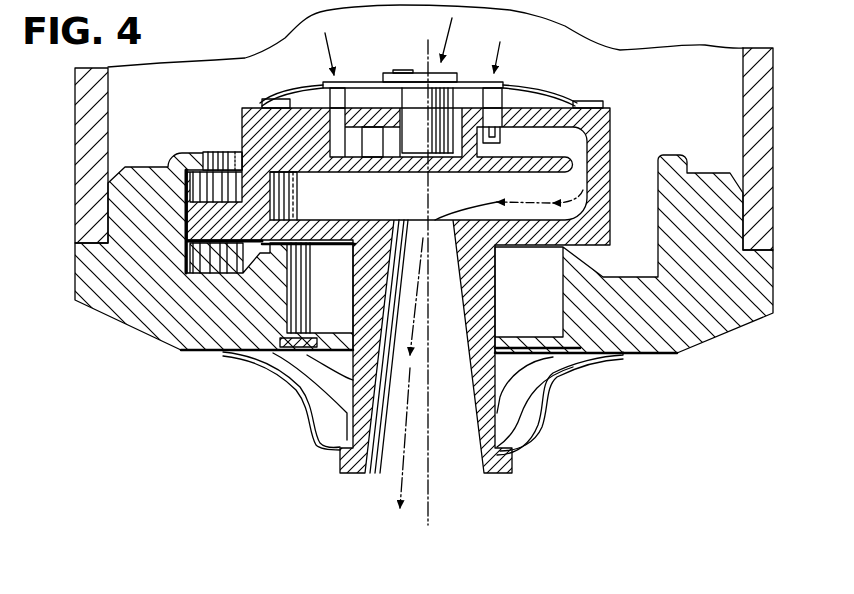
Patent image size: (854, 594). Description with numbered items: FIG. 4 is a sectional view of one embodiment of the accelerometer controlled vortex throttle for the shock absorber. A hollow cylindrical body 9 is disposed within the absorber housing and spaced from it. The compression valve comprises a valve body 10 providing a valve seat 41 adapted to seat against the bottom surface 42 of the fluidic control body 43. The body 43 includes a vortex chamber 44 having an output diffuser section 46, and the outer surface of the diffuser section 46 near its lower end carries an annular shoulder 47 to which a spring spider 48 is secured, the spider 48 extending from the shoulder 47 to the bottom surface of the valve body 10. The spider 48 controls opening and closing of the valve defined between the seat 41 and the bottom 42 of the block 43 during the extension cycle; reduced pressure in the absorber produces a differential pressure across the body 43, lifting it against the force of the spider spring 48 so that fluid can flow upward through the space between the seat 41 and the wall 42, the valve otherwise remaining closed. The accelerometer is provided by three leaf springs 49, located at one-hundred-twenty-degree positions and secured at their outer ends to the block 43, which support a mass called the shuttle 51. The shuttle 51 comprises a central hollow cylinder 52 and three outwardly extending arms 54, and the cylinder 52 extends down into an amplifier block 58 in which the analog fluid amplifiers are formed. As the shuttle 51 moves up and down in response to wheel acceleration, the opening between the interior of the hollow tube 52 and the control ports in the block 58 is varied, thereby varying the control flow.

The hollow cylindrical body 9 is at (743, 107).
The valve body 10 is at (180, 352).
The valve seat 41 is at (284, 240).
The bottom surface 42 is at (320, 250).
The fluidic control body 43 is at (247, 107).
The vortex chamber 44 is at (384, 209).
The output diffuser section 46 is at (460, 372).
The annular shoulder 47 is at (342, 449).
The spring spider 48 is at (547, 417).
The leaf springs 49 is at (296, 86).
The shuttle 51 is at (424, 71).
The central hollow cylinder 52 is at (438, 92).
The outwardly extending arms 54 is at (328, 80).
The amplifier block 58 is at (465, 160).